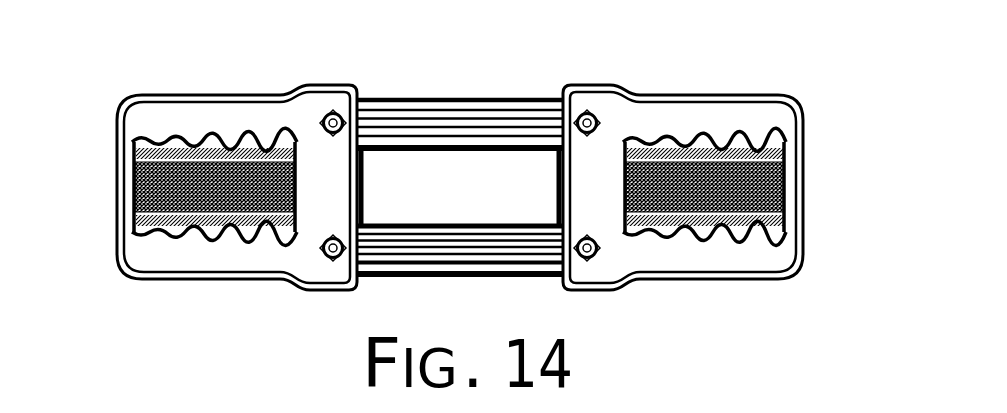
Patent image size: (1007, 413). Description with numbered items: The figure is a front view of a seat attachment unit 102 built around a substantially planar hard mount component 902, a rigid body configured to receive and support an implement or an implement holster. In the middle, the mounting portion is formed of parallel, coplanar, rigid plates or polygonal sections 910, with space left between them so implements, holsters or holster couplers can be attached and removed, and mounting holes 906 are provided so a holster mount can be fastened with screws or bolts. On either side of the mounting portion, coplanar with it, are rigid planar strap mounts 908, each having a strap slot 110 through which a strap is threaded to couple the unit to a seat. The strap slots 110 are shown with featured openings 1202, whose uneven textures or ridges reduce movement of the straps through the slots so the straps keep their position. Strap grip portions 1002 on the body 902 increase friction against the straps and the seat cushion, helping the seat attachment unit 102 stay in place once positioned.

The seat attachment unit 102 is at (811, 38).
The strap slot 110 is at (742, 155).
The hard mount component 902 is at (600, 283).
The mounting hole 906 is at (339, 116).
The strap mount 908 is at (148, 97).
The polygonal section 910 is at (493, 139).
The strap grip portion 1002 is at (137, 198).
The featured opening 1202 is at (190, 233).